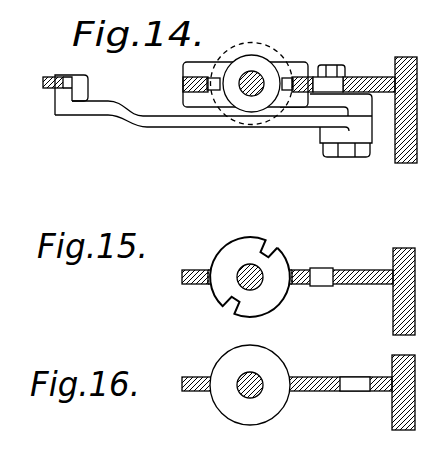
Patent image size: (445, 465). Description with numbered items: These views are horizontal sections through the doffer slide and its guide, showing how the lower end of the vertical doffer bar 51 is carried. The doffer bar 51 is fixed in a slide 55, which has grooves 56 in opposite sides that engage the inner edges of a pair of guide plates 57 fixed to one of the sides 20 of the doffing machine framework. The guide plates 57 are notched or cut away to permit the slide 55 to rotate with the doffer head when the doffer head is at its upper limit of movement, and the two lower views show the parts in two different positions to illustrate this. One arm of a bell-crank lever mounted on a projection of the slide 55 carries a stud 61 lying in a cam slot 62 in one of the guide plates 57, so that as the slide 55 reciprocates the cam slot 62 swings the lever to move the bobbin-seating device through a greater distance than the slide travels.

In FIG. 14, the sides 20 is at (403, 62).
In FIG. 15, the sides 20 is at (405, 262).
In FIG. 15, the doffer bar 51 is at (258, 291).
In FIG. 16, the doffer bar 51 is at (256, 377).
In FIG. 14, the slide 55 is at (251, 83).
In FIG. 15, the slide 55 is at (253, 309).
In FIG. 16, the slide 55 is at (250, 358).
In FIG. 15, the grooves 56 is at (230, 306).
In FIG. 16, the grooves 56 is at (224, 377).
In FIG. 14, the guide plates 57 is at (183, 82).
In FIG. 15, the guide plates 57 is at (181, 277).
In FIG. 16, the guide plates 57 is at (364, 333).
In FIG. 14, the stud 61 is at (328, 84).
In FIG. 15, the cam slot 62 is at (318, 270).